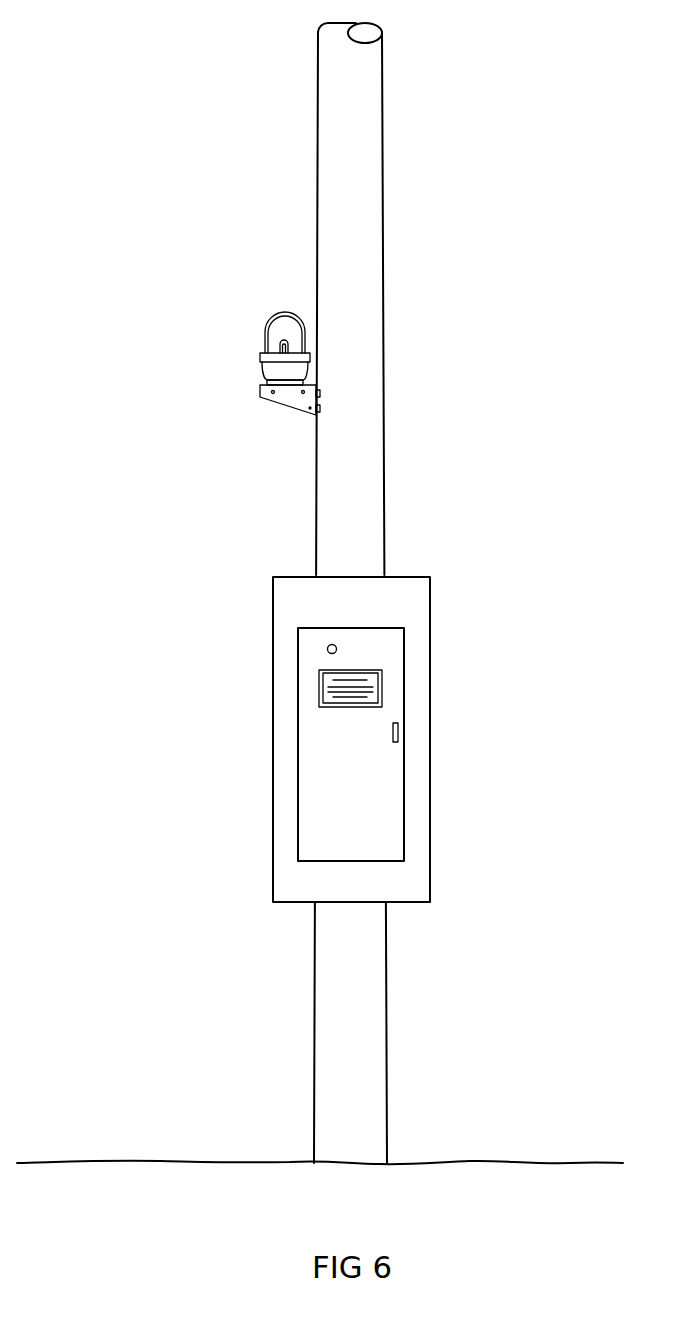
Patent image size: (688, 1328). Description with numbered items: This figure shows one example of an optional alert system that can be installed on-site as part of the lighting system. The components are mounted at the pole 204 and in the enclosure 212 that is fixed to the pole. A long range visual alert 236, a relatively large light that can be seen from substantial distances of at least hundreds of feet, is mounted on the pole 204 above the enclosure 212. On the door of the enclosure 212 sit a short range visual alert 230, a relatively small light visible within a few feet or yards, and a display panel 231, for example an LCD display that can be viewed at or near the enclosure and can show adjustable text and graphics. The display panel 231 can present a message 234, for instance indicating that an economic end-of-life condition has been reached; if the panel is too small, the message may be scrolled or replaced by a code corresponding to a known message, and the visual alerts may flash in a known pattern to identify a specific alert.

The pole 204 is at (317, 177).
The long range visual alert 236 is at (272, 322).
The enclosure 212 is at (272, 582).
The short range visual alert 230 is at (327, 648).
The display panel 231 is at (318, 685).
The message 234 is at (348, 692).